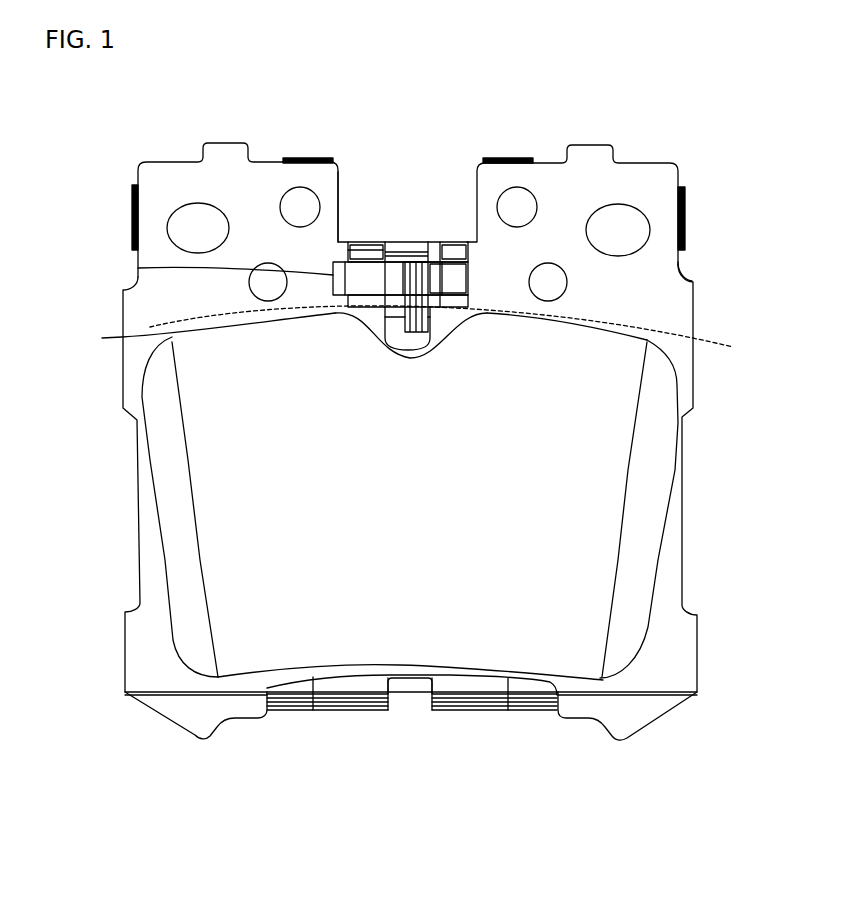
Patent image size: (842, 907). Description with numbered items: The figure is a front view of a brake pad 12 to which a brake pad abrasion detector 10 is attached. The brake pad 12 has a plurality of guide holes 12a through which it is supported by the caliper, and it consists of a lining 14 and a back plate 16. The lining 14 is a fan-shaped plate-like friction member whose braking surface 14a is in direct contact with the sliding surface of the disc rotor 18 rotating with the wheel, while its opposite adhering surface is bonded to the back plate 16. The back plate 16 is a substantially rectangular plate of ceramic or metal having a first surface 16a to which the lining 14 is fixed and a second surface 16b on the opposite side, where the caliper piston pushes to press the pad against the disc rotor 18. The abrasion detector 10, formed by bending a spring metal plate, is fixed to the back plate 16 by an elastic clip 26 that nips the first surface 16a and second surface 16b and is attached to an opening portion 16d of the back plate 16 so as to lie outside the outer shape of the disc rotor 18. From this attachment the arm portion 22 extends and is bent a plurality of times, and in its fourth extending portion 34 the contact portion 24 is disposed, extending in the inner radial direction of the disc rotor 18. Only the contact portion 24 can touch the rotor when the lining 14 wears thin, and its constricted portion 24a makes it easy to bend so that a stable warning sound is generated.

The brake pad abrasion detector 10 is at (368, 253).
The brake pad 12 is at (168, 152).
The guide holes 12a is at (175, 212).
The lining 14 is at (210, 508).
The braking surface 14a is at (465, 645).
The back plate 16 is at (229, 162).
The first surface 16a is at (648, 178).
The second surface 16b is at (680, 268).
The opening portion 16d is at (340, 195).
The disc rotor 18 is at (102, 338).
The arm portion 22 is at (138, 268).
The contact portion 24 is at (425, 250).
The constricted portion 24a is at (433, 290).
The elastic clip 26 is at (457, 250).
The fourth extending portion 34 is at (400, 278).